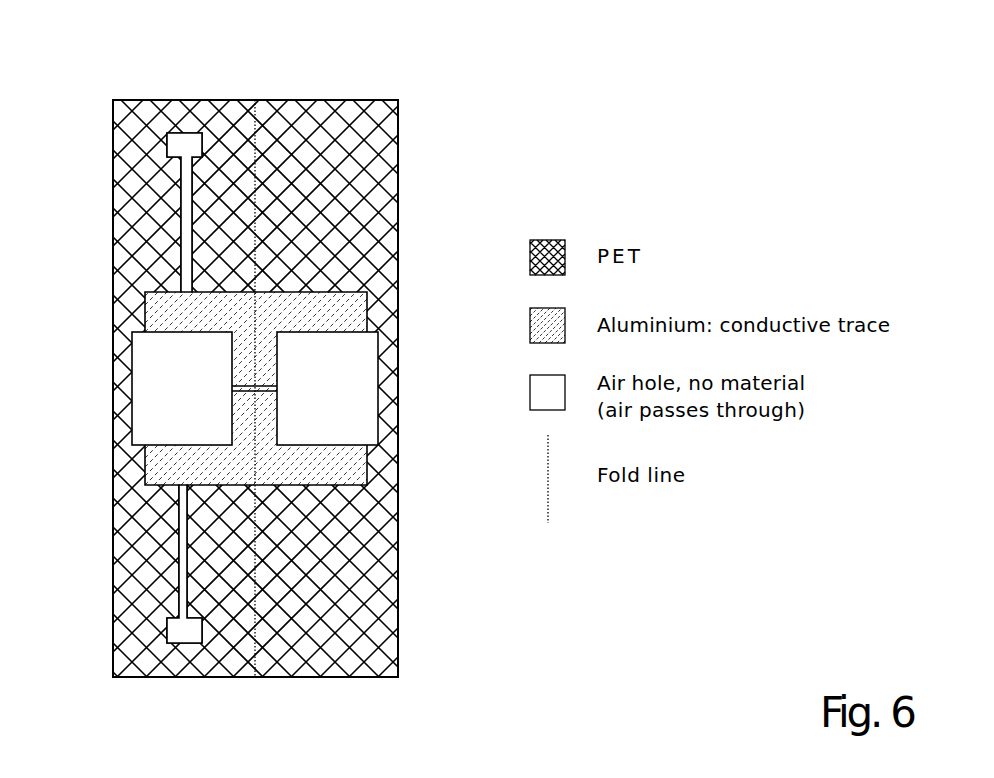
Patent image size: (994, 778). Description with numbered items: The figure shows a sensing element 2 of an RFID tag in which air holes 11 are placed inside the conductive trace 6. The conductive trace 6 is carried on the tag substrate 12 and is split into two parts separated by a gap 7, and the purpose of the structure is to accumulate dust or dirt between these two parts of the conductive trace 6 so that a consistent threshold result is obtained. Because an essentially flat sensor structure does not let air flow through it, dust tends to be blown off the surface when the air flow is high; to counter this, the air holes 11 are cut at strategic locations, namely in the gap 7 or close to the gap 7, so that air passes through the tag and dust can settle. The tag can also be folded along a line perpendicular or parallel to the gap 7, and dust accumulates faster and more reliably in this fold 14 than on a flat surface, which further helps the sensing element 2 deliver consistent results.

The sensing element 2 is at (415, 289).
The conductive trace 6 is at (181, 222).
The gap 7 is at (229, 388).
The air holes 11 is at (183, 360).
The PET substrate 12 is at (383, 145).
The fold 14 is at (245, 103).